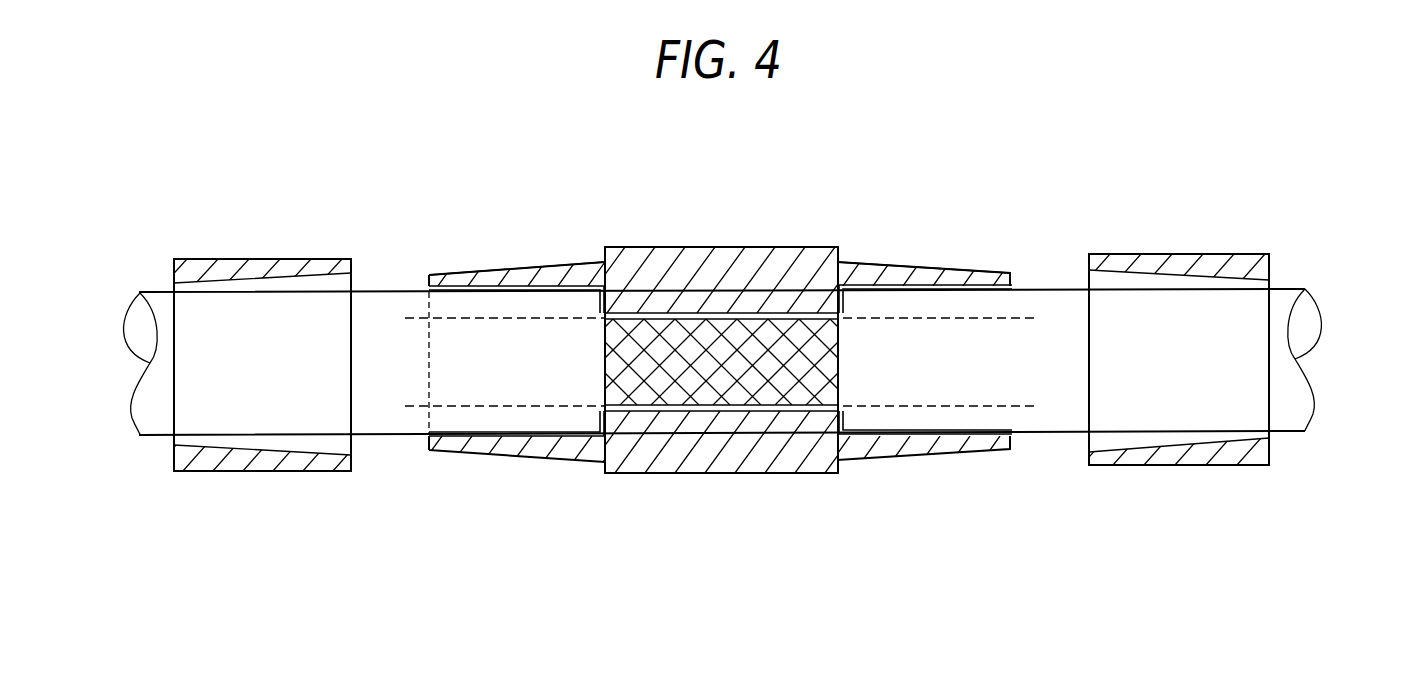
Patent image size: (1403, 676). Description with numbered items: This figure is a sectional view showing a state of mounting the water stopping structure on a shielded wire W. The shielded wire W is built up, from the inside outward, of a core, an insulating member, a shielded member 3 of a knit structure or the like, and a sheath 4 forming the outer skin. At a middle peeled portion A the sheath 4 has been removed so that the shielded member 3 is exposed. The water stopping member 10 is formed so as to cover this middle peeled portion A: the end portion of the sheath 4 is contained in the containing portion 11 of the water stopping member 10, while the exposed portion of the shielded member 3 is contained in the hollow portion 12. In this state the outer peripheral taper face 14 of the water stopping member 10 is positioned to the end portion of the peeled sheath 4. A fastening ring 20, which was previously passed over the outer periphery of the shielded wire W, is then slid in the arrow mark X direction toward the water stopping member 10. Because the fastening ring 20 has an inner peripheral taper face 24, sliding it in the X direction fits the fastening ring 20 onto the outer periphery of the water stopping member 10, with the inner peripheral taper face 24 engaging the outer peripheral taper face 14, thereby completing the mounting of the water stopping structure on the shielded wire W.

The shielded member 3 is at (780, 373).
The sheath 4 is at (513, 420).
The water stopping member 10 is at (829, 207).
The containing portion 11 is at (547, 288).
The hollow portion 12 is at (711, 318).
The outer peripheral taper face 14 is at (500, 262).
The fastening ring 20 is at (242, 252).
The inner peripheral taper face 24 is at (227, 284).
The middle peeled portion A is at (706, 420).
The shielded wire W is at (1289, 437).
The arrow mark X direction X is at (328, 487).